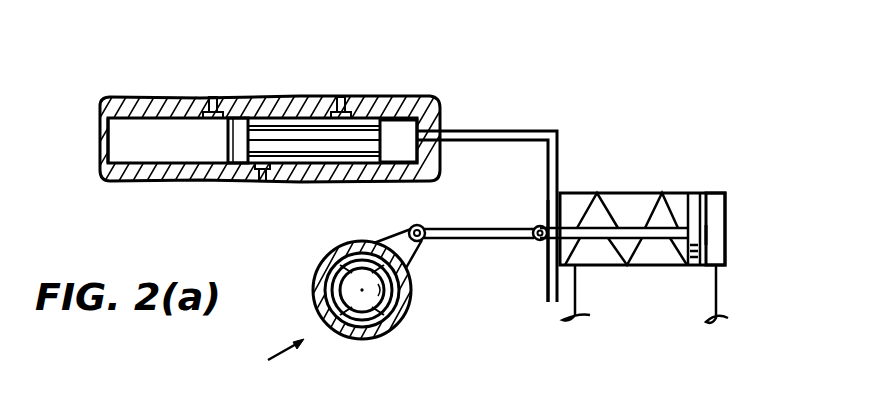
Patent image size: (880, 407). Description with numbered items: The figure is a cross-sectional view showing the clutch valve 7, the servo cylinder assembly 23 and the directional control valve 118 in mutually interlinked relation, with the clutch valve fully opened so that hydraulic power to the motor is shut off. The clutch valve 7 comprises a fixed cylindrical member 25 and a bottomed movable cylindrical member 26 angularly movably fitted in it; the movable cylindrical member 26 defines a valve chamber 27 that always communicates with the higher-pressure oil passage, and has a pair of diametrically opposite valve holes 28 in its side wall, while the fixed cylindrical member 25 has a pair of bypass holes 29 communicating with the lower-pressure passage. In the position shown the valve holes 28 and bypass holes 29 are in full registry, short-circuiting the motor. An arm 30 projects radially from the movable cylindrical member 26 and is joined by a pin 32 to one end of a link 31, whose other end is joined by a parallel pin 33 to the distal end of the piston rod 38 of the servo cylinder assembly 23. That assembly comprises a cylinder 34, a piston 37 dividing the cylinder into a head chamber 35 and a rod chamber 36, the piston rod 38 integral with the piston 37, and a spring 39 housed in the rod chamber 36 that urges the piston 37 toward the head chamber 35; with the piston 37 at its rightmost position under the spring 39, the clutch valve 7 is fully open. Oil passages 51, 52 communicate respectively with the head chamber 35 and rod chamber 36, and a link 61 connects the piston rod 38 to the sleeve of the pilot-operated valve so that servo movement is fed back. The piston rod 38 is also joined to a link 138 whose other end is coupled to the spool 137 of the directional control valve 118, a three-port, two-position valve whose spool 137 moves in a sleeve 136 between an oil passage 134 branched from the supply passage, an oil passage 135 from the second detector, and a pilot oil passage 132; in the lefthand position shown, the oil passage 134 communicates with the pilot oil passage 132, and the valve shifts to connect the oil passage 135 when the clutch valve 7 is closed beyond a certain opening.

The directional control valve 118 is at (296, 68).
The sleeve 136 is at (150, 100).
The oil passage 135 is at (212, 96).
The oil passage 134 is at (341, 96).
The pilot oil passage 132 is at (264, 183).
The spool 137 is at (308, 147).
The link 138 is at (514, 130).
The link 61 is at (548, 262).
The servo cylinder assembly 23 is at (666, 168).
The rod chamber 36 is at (582, 206).
The spring 39 is at (620, 212).
The piston rod 38 is at (663, 240).
The piston 37 is at (700, 196).
The cylinder 34 is at (727, 206).
The head chamber 35 is at (727, 238).
The oil passage 52 is at (592, 292).
The oil passage 51 is at (718, 300).
The pin 33 is at (538, 226).
The link 31 is at (471, 228).
The pin 32 is at (418, 225).
The arm 30 is at (432, 252).
The fixed cylindrical member 25 is at (320, 302).
The movable cylindrical member 26 is at (406, 316).
The valve holes 28 is at (352, 243).
The bypass holes 29 is at (372, 241).
The valve chamber 27 is at (398, 300).
The clutch valve 7 is at (275, 358).